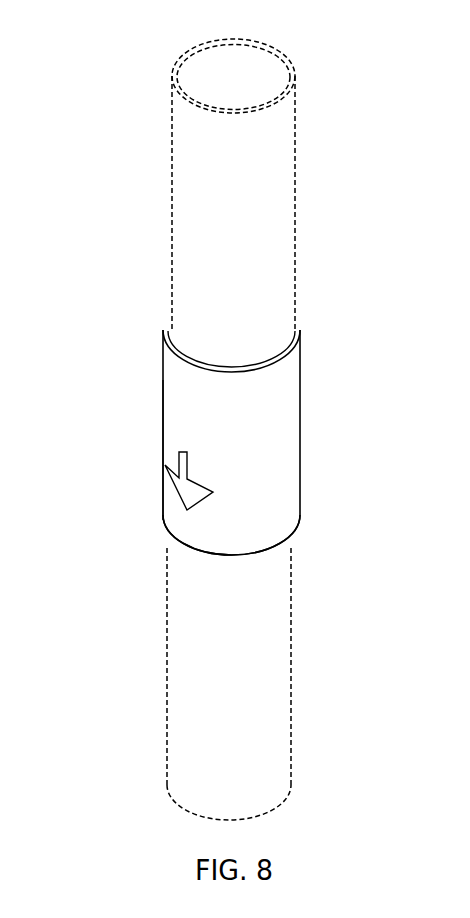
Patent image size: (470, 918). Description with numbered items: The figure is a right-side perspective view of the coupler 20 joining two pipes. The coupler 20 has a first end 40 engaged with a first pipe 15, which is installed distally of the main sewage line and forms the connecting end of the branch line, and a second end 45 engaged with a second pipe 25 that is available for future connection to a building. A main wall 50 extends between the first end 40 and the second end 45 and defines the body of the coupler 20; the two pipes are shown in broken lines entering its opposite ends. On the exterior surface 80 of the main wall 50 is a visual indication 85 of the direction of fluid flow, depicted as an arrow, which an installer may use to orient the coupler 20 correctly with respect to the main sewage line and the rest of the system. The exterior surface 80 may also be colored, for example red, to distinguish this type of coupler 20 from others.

The first pipe 15 is at (268, 748).
The coupler 20 is at (240, 416).
The second pipe 25 is at (268, 200).
The first end 40 is at (282, 543).
The second end 45 is at (291, 350).
The main wall 50 is at (280, 457).
The exterior surface 80 is at (187, 403).
The visual indication 85 is at (183, 500).